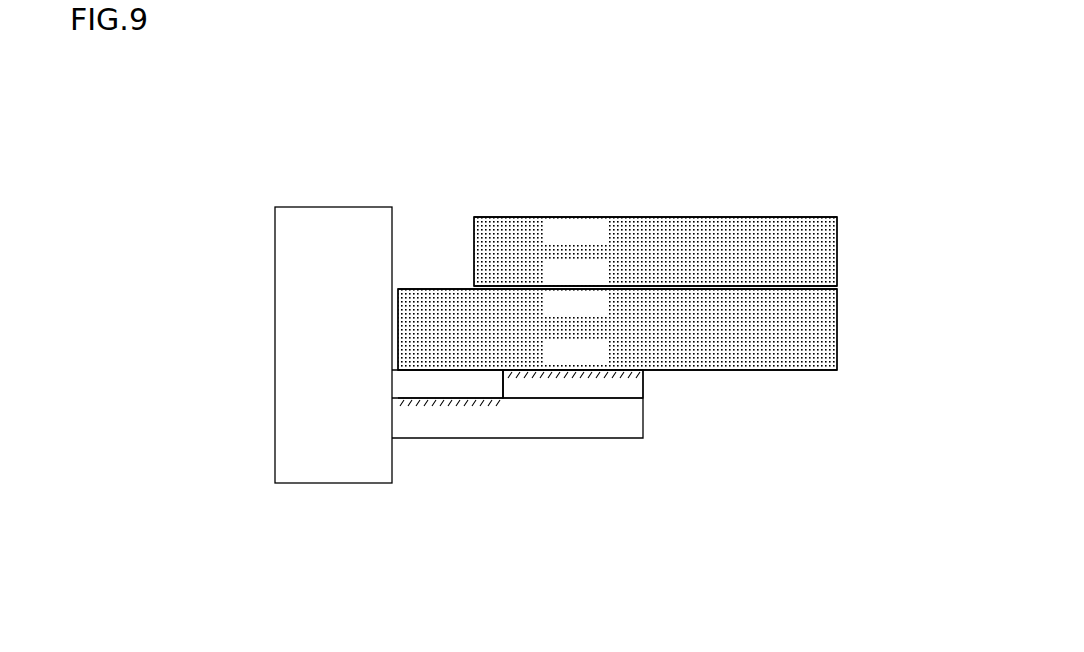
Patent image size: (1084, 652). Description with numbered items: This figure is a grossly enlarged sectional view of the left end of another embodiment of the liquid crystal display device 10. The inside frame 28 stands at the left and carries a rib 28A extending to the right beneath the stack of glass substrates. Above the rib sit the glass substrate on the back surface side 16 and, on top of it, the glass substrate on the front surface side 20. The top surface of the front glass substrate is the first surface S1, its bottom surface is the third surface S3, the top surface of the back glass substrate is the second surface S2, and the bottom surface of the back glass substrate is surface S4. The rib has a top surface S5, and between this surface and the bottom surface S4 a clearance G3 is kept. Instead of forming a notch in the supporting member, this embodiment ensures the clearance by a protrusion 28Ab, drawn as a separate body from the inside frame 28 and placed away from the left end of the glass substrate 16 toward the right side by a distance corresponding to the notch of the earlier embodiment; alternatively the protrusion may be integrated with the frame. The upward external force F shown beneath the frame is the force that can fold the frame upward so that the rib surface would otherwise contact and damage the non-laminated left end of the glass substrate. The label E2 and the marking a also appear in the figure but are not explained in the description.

The liquid crystal display device 10 is at (653, 235).
The glass substrate on the back surface side 16 is at (837, 318).
The glass substrate on the front surface side 20 is at (837, 237).
The inside frame 28 is at (330, 207).
The rib 28A is at (587, 445).
The protrusion 28Ab is at (643, 382).
The first surface S1 is at (553, 222).
The second surface S2 is at (553, 292).
The third surface S3 is at (552, 280).
The bottom surface of the glass substrate S4 is at (552, 361).
The top surface of the rib S5 is at (553, 384).
The clearance G3 is at (449, 384).
The edge region E2 is at (686, 134).
The external force F is at (337, 503).
The dimension a is at (642, 533).